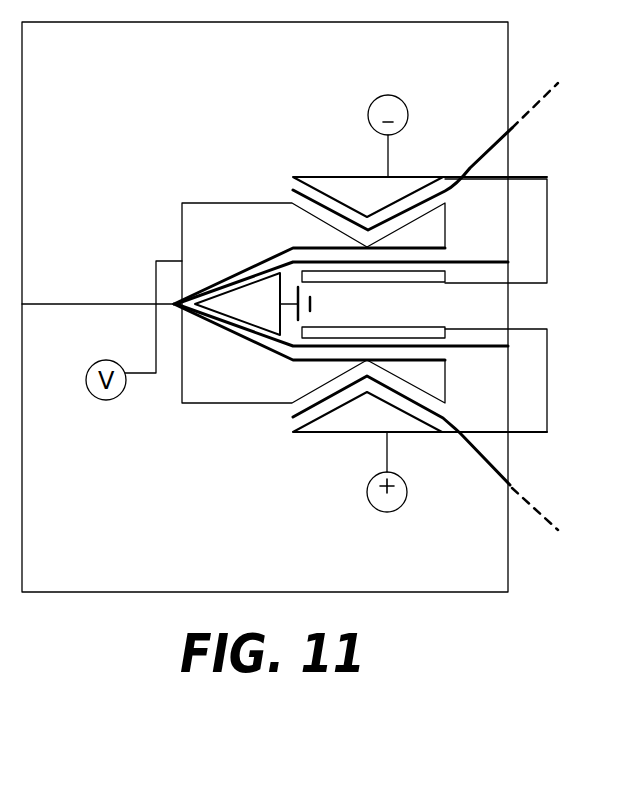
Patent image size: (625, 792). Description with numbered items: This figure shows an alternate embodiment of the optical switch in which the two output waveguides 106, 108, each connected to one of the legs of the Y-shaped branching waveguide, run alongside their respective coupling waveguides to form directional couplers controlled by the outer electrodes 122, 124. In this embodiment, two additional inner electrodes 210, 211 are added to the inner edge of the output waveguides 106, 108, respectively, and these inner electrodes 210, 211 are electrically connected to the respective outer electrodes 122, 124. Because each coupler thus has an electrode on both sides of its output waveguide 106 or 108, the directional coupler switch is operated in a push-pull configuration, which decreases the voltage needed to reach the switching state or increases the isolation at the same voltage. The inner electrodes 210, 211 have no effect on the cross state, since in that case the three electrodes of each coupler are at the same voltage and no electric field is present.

The electrode 122 is at (337, 180).
The electrode 124 is at (328, 427).
The output waveguide 106 is at (477, 262).
The output waveguide 108 is at (473, 350).
The inner electrode 210 is at (440, 283).
The inner electrode 211 is at (435, 332).